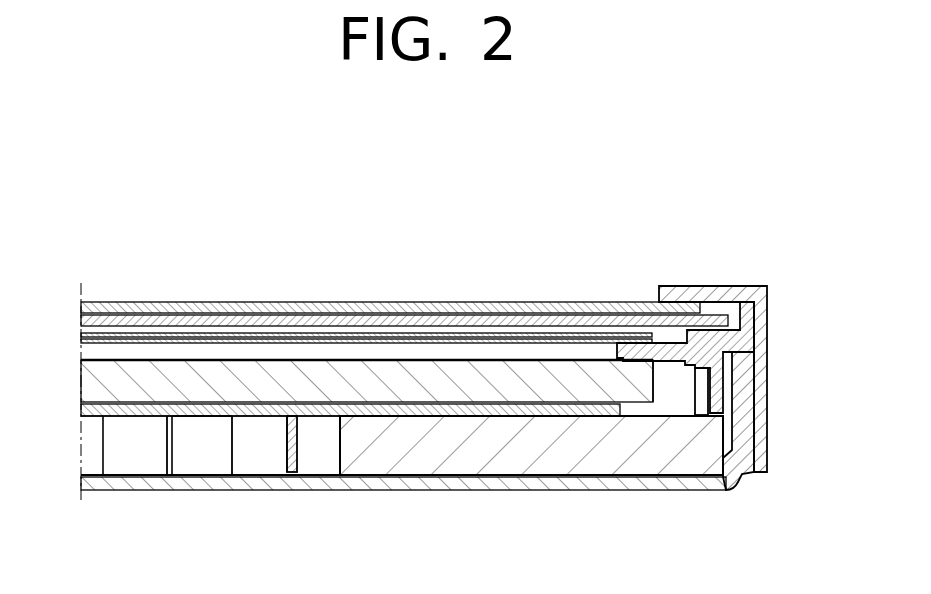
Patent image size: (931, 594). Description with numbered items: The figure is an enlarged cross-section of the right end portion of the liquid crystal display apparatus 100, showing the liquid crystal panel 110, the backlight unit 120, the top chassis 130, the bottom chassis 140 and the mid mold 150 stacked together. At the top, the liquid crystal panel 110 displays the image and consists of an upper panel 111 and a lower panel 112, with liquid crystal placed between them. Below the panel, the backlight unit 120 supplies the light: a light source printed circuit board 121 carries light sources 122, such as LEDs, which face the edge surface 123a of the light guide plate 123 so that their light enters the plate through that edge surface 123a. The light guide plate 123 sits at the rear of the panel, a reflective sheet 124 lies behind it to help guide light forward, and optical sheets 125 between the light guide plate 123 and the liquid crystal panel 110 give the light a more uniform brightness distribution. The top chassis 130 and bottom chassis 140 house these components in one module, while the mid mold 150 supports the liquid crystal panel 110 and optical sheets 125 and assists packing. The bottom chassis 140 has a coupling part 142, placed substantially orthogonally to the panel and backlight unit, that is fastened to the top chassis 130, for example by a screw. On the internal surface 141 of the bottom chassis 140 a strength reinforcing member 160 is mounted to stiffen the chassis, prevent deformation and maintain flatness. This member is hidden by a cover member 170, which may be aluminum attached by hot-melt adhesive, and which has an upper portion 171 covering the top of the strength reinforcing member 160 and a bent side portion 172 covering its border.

The liquid crystal display apparatus 100 is at (409, 162).
The liquid crystal panel 110 is at (375, 282).
The upper panel 111 is at (81, 305).
The lower panel 112 is at (81, 317).
The backlight unit 120 is at (402, 367).
The light source printed circuit board 121 is at (528, 430).
The light source 122 is at (651, 328).
The light guide plate 123 is at (417, 370).
The edge surface 123a is at (652, 388).
The reflective sheet 124 is at (462, 407).
The optical sheets 125 is at (358, 333).
The top chassis 130 is at (778, 338).
The bottom chassis 140 is at (455, 467).
The internal surface 141 is at (324, 472).
The coupling part 142 is at (747, 417).
The mid mold 150 is at (733, 326).
The strength reinforcing member 160 is at (157, 443).
The cover member 170 is at (302, 459).
The upper portion 171 is at (200, 412).
The side portion 172 is at (286, 440).